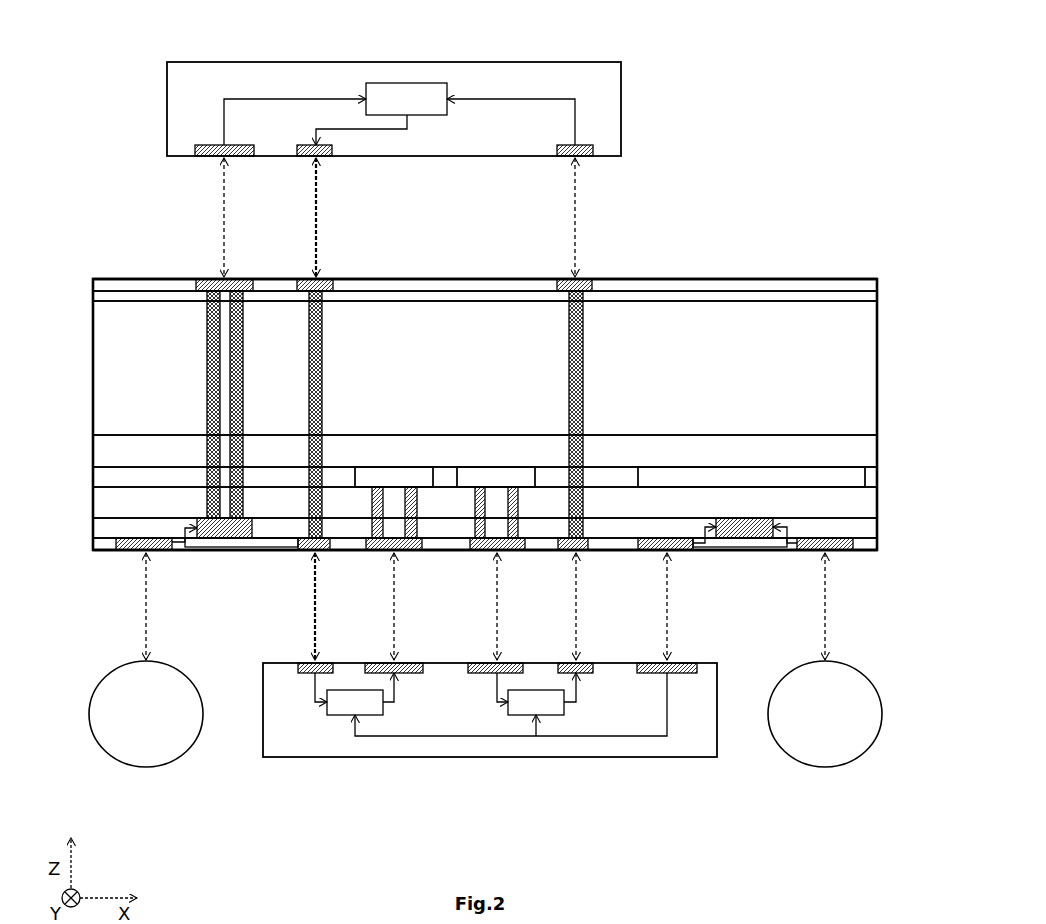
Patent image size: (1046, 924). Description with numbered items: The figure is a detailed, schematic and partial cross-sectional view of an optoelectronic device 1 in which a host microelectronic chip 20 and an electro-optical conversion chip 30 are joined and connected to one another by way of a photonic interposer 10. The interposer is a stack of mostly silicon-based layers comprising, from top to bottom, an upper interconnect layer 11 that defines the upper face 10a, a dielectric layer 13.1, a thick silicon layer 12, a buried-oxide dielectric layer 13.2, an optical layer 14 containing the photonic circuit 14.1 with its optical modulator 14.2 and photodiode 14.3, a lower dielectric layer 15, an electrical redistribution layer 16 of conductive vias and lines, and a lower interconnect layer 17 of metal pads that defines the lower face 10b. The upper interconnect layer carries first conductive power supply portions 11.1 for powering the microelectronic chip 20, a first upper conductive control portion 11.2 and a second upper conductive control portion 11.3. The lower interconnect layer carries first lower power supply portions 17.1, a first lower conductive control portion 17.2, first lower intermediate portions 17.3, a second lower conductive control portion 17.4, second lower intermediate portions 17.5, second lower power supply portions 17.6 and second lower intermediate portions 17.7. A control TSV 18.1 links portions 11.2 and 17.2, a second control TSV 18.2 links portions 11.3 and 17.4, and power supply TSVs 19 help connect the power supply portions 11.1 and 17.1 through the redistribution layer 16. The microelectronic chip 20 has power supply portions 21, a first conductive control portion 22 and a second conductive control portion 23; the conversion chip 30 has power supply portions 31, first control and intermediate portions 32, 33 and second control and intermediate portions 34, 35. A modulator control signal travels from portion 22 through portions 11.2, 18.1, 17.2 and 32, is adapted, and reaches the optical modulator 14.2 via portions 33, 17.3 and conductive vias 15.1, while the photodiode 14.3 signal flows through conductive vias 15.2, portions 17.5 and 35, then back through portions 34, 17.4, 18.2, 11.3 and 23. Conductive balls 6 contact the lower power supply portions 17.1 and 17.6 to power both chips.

The optoelectronic device 1 is at (92, 42).
The power supply pads 6 is at (884, 714).
The photonic interposer 10 is at (100, 255).
The upper face 10a is at (745, 279).
The lower face 10b is at (763, 553).
The upper interconnect layer 11 is at (878, 284).
The first conductive power supply portions 11.1 is at (215, 279).
The first upper conductive control portion 11.2 is at (305, 279).
The second upper conductive control portion 11.3 is at (570, 279).
The thick silicon layer 12 is at (878, 362).
The dielectric layer 13.1 is at (878, 296).
The dielectric layer 13.2 is at (878, 447).
The optical layer 14 is at (878, 477).
The photonic circuit 14.1 is at (712, 465).
The optical modulator 14.2 is at (393, 465).
The photodiode 14.3 is at (496, 465).
The lower dielectric layer 15 is at (878, 502).
The conductive vias 15.1 is at (370, 512).
The conductive vias 15.2 is at (522, 512).
The electrical redistribution layer 16 is at (878, 527).
The lower interconnect layer 17 is at (878, 545).
The first lower conductive power supply portions 17.1 is at (136, 553).
The first lower conductive control portion 17.2 is at (308, 553).
The first lower conductive intermediate portions 17.3 is at (388, 553).
The second lower conductive control portion 17.4 is at (588, 553).
The second lower conductive intermediate portions 17.5 is at (500, 553).
The second lower conductive power supply portions 17.6 is at (836, 553).
The second lower conductive intermediate portions 17.7 is at (678, 553).
The control TSV 18.1 is at (325, 382).
The control TSV 18.2 is at (586, 382).
The power supply TSVs 19 is at (205, 407).
The microelectronic chip 20 is at (166, 110).
The conductive power supply portions 21 is at (215, 158).
The first conductive control portion 22 is at (308, 158).
The second conductive control portion 23 is at (572, 158).
The electro-optical conversion chip 30 is at (490, 758).
The conductive power supply portions 31 is at (685, 662).
The first conductive control portion 32 is at (306, 662).
The first conductive intermediate portion 33 is at (380, 662).
The second conductive control portion 34 is at (585, 662).
The second conductive intermediate portion 35 is at (505, 662).